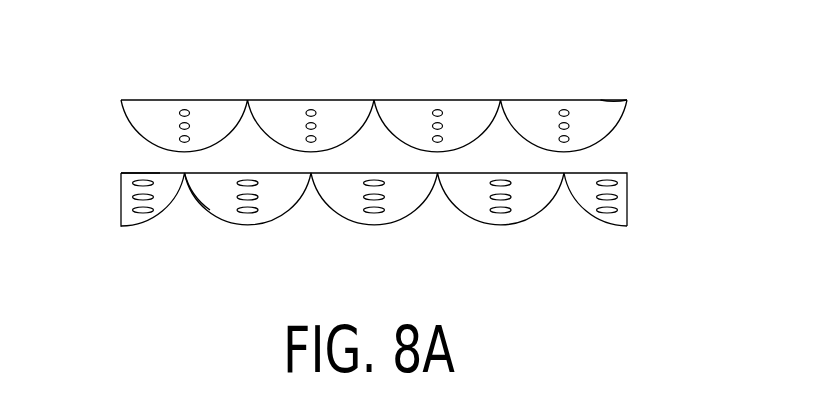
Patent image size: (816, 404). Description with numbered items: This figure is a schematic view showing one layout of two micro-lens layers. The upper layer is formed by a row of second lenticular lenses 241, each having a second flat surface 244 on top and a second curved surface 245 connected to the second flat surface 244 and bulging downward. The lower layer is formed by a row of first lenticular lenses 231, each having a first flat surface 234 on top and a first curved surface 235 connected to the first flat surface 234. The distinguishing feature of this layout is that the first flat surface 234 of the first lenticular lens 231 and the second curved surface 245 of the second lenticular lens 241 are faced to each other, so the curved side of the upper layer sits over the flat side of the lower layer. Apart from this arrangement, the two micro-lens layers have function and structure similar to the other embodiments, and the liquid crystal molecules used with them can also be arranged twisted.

The first lenticular lens 231 is at (122, 200).
The first flat surface 234 is at (142, 170).
The first curved surface 235 is at (197, 200).
The second lenticular lens 241 is at (167, 110).
The second flat surface 244 is at (563, 100).
The second curved surface 245 is at (623, 120).